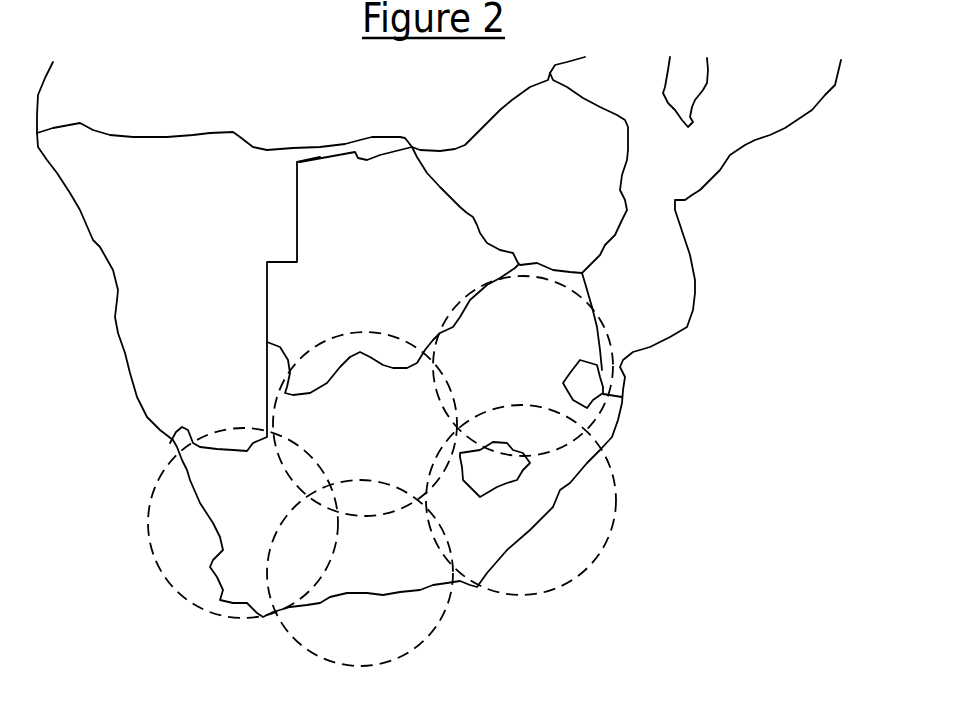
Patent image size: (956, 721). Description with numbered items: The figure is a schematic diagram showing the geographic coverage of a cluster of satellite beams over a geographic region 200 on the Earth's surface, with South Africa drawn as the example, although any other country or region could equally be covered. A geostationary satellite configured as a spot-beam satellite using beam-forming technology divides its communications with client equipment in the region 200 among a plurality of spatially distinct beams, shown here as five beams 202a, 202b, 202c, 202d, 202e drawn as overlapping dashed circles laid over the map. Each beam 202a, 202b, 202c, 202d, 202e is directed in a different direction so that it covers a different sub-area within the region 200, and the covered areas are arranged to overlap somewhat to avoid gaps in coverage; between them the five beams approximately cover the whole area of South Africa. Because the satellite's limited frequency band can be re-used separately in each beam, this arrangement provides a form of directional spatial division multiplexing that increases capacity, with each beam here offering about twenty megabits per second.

The geographic region 200 is at (112, 462).
The beam 202a is at (615, 507).
The beam 202b is at (428, 633).
The beam 202c is at (175, 588).
The beam 202d is at (601, 314).
The beam 202e is at (358, 332).